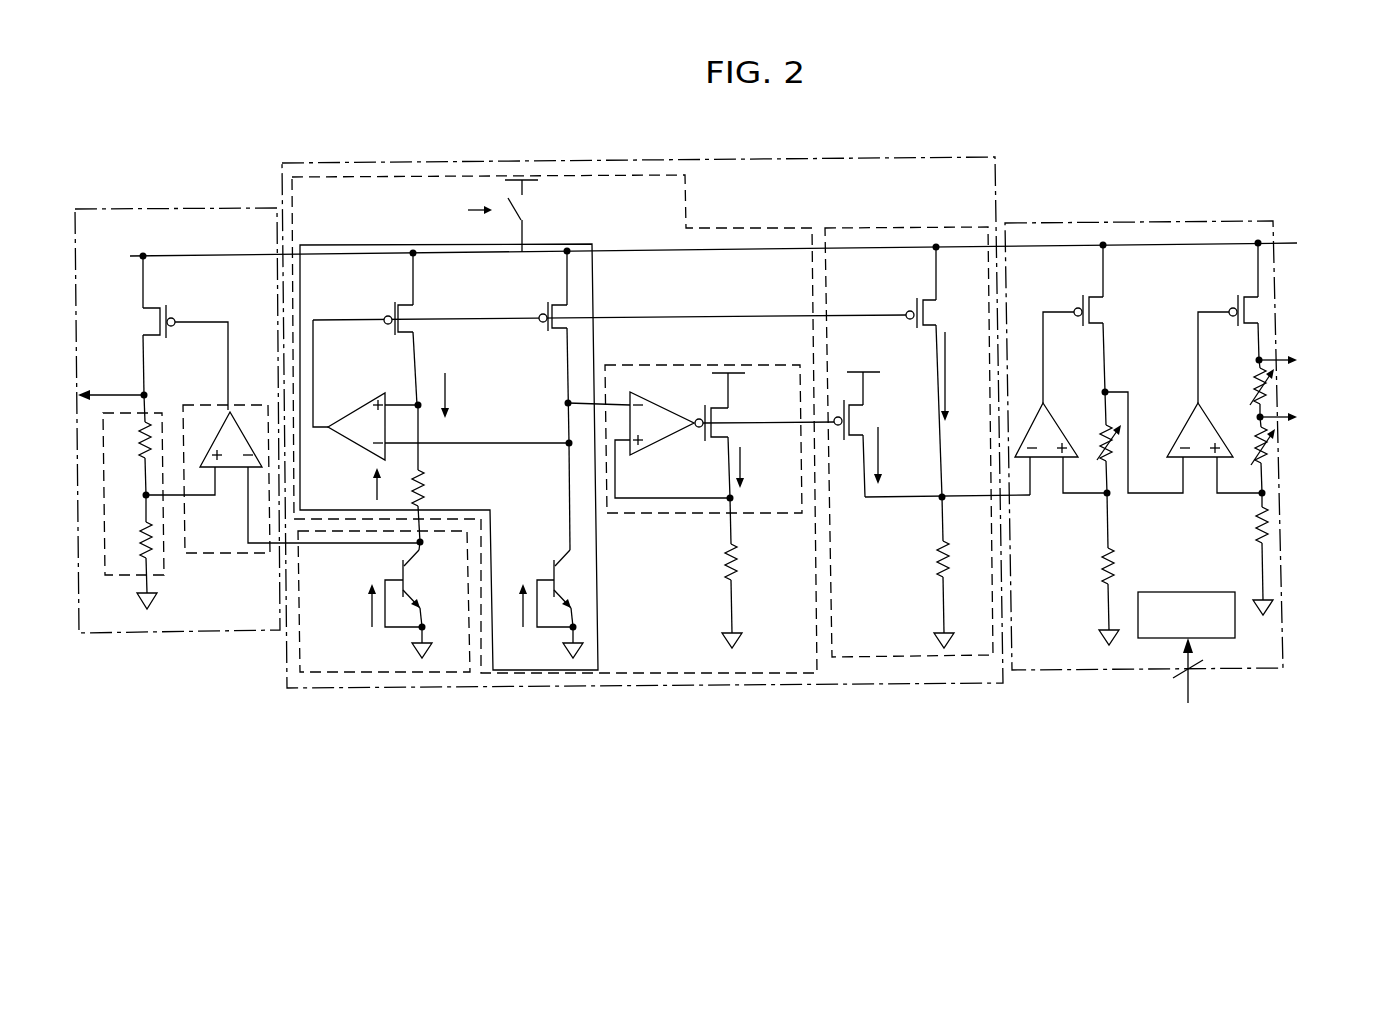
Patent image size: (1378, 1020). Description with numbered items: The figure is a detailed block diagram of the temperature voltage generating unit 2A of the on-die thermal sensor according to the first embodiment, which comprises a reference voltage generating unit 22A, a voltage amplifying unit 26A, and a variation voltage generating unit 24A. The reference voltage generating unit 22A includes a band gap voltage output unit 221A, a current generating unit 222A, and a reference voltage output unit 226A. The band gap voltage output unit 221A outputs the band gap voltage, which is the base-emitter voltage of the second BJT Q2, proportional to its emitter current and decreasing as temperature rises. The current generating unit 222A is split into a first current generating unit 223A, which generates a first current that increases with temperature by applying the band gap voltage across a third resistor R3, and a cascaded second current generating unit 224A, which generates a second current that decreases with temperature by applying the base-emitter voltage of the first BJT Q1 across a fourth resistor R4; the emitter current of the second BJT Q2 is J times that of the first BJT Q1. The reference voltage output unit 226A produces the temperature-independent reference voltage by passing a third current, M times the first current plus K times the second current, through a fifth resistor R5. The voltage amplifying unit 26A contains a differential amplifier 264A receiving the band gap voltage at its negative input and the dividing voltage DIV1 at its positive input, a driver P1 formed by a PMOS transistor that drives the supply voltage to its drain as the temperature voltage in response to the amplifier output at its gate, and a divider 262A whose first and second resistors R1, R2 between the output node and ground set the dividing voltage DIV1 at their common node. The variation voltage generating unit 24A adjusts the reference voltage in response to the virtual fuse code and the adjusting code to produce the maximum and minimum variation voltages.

The temperature voltage generating unit 2A is at (1108, 105).
The reference voltage generating unit 22A is at (938, 163).
The band gap voltage output unit 221A is at (370, 672).
The current generating unit 222A is at (757, 228).
The first current generating unit 223A is at (600, 614).
The second current generating unit 224A is at (672, 513).
The reference voltage output unit 226A is at (922, 228).
The variation voltage generating unit 24A is at (1217, 222).
The voltage amplifying unit 26A is at (193, 209).
The divider 262A is at (110, 577).
The differential amplifier 264A is at (210, 556).
The driver P1 is at (174, 333).
The first resistor R1 is at (133, 544).
The second resistor R2 is at (133, 445).
The third resistor R3 is at (432, 473).
The fourth resistor R4 is at (745, 565).
The fifth resistor R5 is at (957, 565).
The first bipolar junction transistor Q1 is at (564, 550).
The second bipolar junction transistor Q2 is at (412, 600).
The dividing voltage DIV1 is at (225, 464).